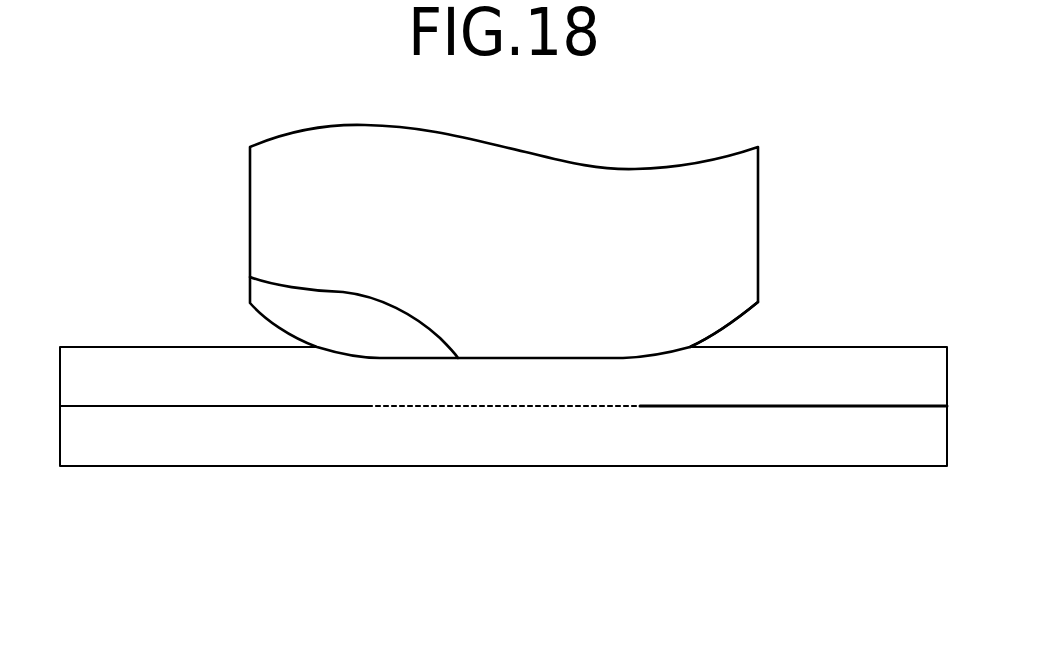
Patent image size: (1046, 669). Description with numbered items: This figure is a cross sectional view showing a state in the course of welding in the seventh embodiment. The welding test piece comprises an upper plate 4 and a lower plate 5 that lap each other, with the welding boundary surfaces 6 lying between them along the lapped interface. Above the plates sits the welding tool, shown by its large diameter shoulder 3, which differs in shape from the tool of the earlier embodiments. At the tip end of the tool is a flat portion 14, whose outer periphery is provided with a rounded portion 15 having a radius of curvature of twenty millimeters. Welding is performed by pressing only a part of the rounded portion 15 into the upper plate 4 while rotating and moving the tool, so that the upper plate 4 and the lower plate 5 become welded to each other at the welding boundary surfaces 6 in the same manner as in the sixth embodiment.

The shoulder 3 is at (758, 218).
The flat portion 14 is at (250, 277).
The rounded portion 15 is at (735, 323).
The upper plate 4 is at (92, 347).
The lower plate 5 is at (88, 466).
The welding boundary surfaces 6 is at (517, 406).